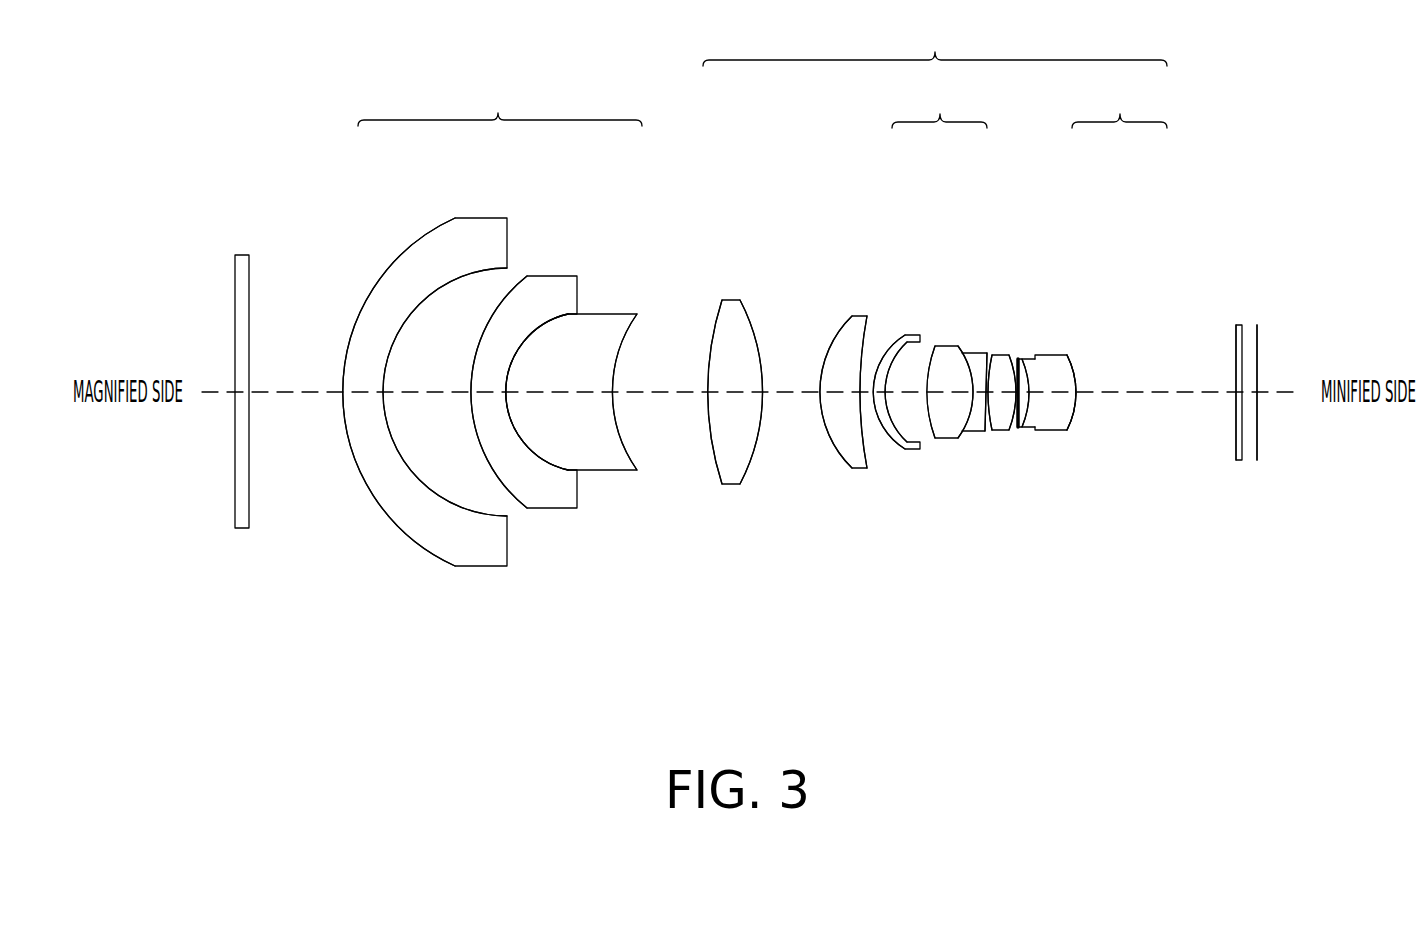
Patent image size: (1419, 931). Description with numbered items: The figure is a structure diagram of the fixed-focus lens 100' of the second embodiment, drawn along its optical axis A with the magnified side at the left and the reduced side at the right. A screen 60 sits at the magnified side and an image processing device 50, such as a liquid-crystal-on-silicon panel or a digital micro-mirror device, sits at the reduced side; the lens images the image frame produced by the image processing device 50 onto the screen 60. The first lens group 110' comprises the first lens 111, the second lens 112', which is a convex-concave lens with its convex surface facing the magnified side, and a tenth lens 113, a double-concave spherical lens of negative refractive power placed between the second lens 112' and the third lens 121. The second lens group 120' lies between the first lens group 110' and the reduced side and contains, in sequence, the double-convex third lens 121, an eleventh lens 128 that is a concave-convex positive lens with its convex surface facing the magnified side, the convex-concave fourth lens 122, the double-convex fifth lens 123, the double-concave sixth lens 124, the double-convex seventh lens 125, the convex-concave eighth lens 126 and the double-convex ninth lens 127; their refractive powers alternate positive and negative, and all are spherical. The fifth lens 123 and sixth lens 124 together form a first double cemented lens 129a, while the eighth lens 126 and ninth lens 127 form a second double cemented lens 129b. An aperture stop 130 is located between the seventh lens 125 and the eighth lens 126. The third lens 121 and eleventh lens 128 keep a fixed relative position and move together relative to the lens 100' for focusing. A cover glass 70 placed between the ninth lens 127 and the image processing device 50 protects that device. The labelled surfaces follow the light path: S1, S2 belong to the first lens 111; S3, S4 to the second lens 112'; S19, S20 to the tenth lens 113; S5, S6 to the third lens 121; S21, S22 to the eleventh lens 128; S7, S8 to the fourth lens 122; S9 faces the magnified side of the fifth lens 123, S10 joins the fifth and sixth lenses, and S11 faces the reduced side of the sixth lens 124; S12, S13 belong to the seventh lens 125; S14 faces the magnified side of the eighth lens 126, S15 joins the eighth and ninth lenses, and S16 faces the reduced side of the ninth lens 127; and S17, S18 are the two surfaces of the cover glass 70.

The fixed-focus lens 100' is at (1339, 662).
The first lens group 110' is at (500, 97).
The second lens group 120' is at (935, 36).
The first double cemented lens 129a is at (939, 99).
The second double cemented lens 129b is at (1119, 99).
The first lens 111 is at (445, 261).
The second lens 112' is at (524, 318).
The tenth lens 113 is at (605, 333).
The third lens 121 is at (729, 320).
The eleventh lens 128 is at (853, 340).
The fourth lens 122 is at (903, 333).
The fifth lens 123 is at (943, 352).
The sixth lens 124 is at (975, 352).
The seventh lens 125 is at (1002, 368).
The eighth lens 126 is at (1031, 362).
The ninth lens 127 is at (1060, 373).
The aperture stop 130 is at (1030, 406).
The screen 60 is at (243, 488).
The cover glass 70 is at (1239, 356).
The image processing device 50 is at (1258, 445).
The optical axis A is at (638, 384).
The surface S1 is at (387, 508).
The surface S2 is at (402, 448).
The surface S3 is at (483, 458).
The surface S4 is at (515, 422).
The surface S5 is at (711, 431).
The surface S6 is at (757, 433).
The surface S7 is at (895, 445).
The surface S8 is at (893, 422).
The surface S9 is at (926, 403).
The surface S10 is at (957, 369).
The surface S11 is at (984, 412).
The surface S12 is at (990, 405).
The surface S13 is at (1012, 405).
The surface S14 is at (1019, 414).
The surface S15 is at (1077, 403).
The surface S16 is at (1078, 404).
The surface S17 is at (1235, 430).
The surface S18 is at (1253, 407).
The surface S19 is at (593, 420).
The surface S20 is at (623, 437).
The surface S21 is at (823, 422).
The surface S22 is at (867, 452).